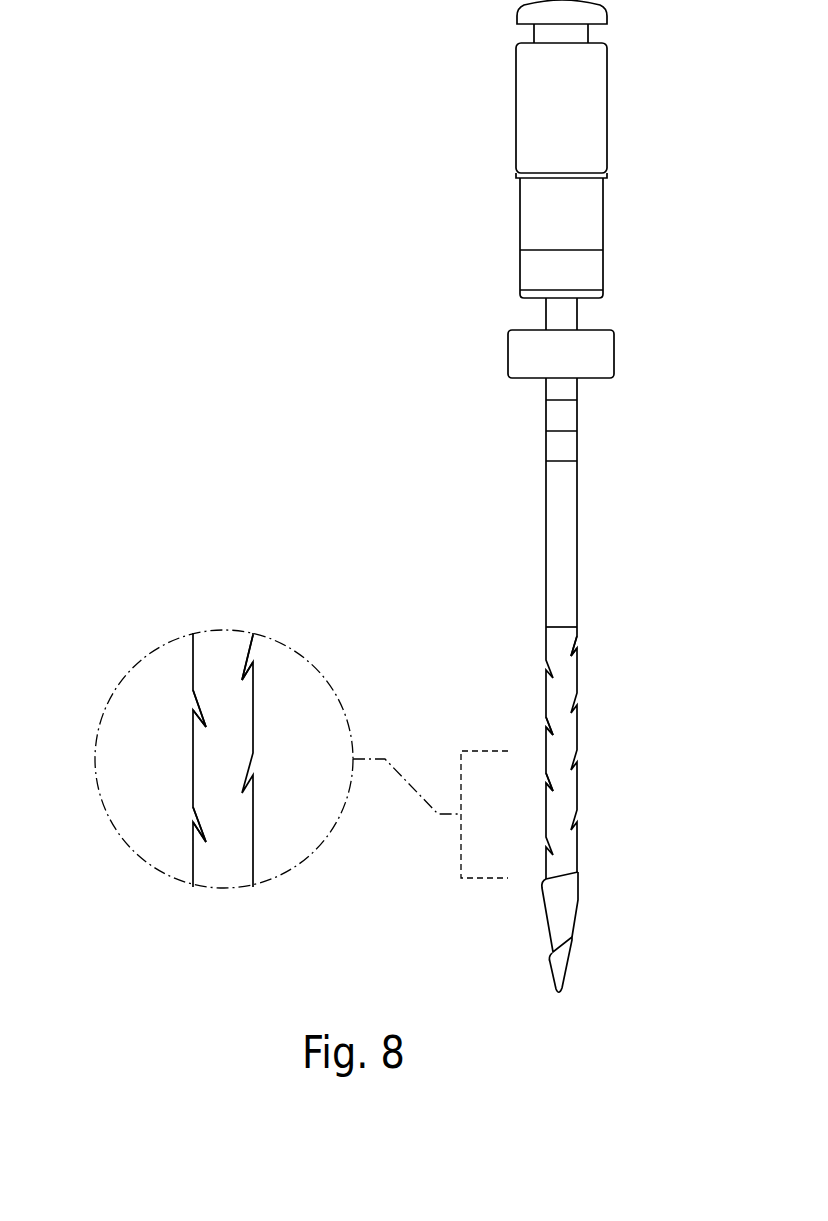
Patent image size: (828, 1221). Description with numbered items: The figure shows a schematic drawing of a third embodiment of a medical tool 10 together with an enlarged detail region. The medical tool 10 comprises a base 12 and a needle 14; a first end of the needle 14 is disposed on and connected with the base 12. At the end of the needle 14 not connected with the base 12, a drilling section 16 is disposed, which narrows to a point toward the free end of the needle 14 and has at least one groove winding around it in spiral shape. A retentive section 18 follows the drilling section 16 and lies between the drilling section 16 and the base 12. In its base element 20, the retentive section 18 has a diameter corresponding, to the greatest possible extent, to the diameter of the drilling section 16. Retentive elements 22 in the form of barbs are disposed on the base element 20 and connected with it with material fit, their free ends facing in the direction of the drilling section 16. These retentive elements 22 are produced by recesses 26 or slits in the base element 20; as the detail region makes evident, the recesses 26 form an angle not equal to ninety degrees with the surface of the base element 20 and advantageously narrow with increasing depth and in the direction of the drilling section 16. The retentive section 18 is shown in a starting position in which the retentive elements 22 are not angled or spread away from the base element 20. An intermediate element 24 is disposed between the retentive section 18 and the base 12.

The medical tool 10 is at (211, 142).
The base 12 is at (493, 140).
The needle 14 is at (399, 518).
The drilling section 16 is at (532, 925).
The retentive section 18 is at (527, 651).
The base element 20 is at (572, 680).
The retentive elements 22 is at (584, 751).
The intermediate element 24 is at (510, 444).
The recesses 26 is at (187, 697).